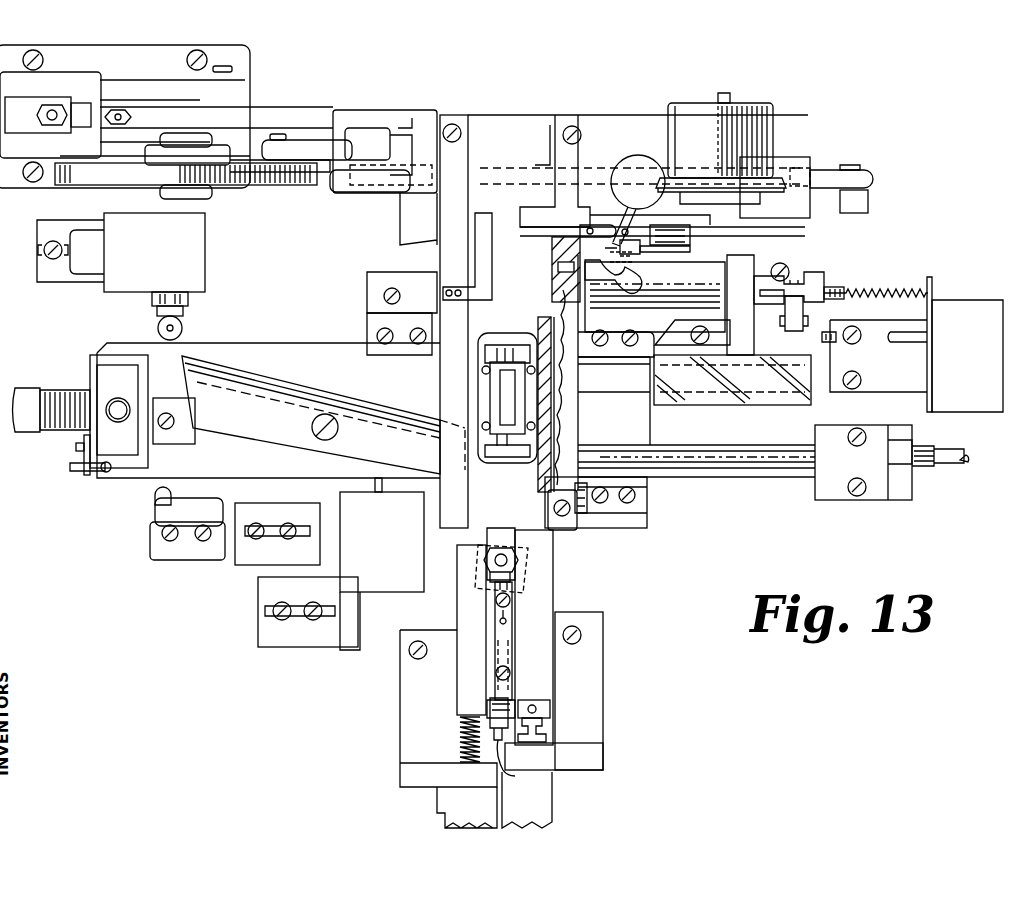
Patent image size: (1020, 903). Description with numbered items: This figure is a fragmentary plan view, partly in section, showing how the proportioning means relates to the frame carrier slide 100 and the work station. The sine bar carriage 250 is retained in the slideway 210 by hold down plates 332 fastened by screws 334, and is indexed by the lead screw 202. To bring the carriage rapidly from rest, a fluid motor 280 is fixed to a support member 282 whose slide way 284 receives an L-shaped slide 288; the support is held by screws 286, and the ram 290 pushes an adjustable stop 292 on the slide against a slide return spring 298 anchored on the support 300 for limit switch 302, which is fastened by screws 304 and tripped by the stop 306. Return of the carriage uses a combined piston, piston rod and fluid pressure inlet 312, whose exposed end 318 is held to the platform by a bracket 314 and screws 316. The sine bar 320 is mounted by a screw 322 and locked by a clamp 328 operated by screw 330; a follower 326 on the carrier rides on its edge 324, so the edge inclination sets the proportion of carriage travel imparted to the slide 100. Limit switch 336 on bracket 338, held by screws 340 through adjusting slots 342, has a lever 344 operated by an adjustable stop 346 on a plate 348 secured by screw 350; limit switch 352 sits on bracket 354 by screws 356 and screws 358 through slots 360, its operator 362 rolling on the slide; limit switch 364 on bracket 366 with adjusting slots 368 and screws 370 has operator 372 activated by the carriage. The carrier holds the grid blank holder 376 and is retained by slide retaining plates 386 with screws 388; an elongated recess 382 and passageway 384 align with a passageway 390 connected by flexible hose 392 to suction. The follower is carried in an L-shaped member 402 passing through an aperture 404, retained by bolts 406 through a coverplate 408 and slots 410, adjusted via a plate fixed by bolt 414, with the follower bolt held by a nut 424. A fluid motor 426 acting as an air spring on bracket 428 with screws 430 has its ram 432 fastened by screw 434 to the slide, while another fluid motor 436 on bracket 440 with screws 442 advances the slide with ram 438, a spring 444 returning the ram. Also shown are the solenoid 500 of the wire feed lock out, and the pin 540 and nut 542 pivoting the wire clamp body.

The frame carrier slide 100 is at (560, 540).
The lead screw 202 is at (60, 390).
The slideway 210 is at (648, 524).
The sine bar carriage 250 is at (268, 410).
The fluid motor 280 is at (655, 297).
The support member 282 is at (812, 278).
The slide way 284 is at (808, 398).
The screws 286 is at (752, 265).
The L-shaped slide 288 is at (790, 315).
The ram 290 is at (783, 263).
The adjustable stop 292 is at (863, 279).
The slide return spring 298 is at (930, 272).
The support 300 is at (932, 282).
The limit switch 302 is at (961, 342).
The screws 304 is at (861, 380).
The stop 306 is at (828, 330).
The combined piston, piston rod and fluid pressure inlet 312 is at (700, 480).
The bracket 314 is at (863, 475).
The screws 316 is at (858, 496).
The exposed end 318 is at (953, 447).
The sine bar 320 is at (378, 406).
The screw 322 is at (338, 427).
The edge 324 is at (311, 415).
The follower 326 is at (527, 565).
The clamp 328 is at (197, 440).
The screw 330 is at (170, 430).
The hold down plates 332 is at (640, 488).
The screws 334 is at (633, 500).
The limit switch 336 is at (382, 542).
The bracket 338 is at (360, 605).
The screws 340 is at (280, 603).
The adjusting slots 342 is at (330, 615).
The lever 344 is at (380, 478).
The adjustable stop 346 is at (105, 472).
The plate 348 is at (86, 475).
The screw 350 is at (76, 447).
The limit switch 352 is at (189, 512).
The bracket 354 is at (222, 562).
The screws 356 is at (172, 545).
The screws 358 is at (262, 530).
The slots 360 is at (285, 540).
The operator 362 is at (172, 490).
The limit switch 364 is at (154, 252).
The bracket 366 is at (52, 280).
The adjusting slots 368 is at (44, 255).
The screws 370 is at (55, 241).
The operator 372 is at (182, 322).
The holder 376 is at (478, 392).
The elongated recess 382 is at (540, 496).
The passageway 384 is at (552, 395).
The slide retaining plates 386 is at (462, 157).
The screws 388 is at (461, 133).
The passageway 390 is at (552, 268).
The flexible hose 392 is at (624, 282).
The L-shaped member 402 is at (490, 582).
The aperture 404 is at (490, 525).
The bolts 406 is at (510, 598).
The coverplate 408 is at (524, 654).
The slots 410 is at (506, 618).
The bolt 414 is at (517, 744).
The nut 424 is at (485, 572).
The fluid motor 426 is at (527, 800).
The bracket 428 is at (554, 756).
The screws 430 is at (580, 632).
The ram 432 is at (542, 735).
The screw 434 is at (536, 708).
The fluid motor 436 is at (444, 807).
The ram 438 is at (465, 752).
The bracket 440 is at (462, 631).
The screws 442 is at (410, 655).
The spring 444 is at (458, 728).
The solenoid 500 is at (166, 122).
The pin 540 is at (670, 235).
The nut 542 is at (640, 250).